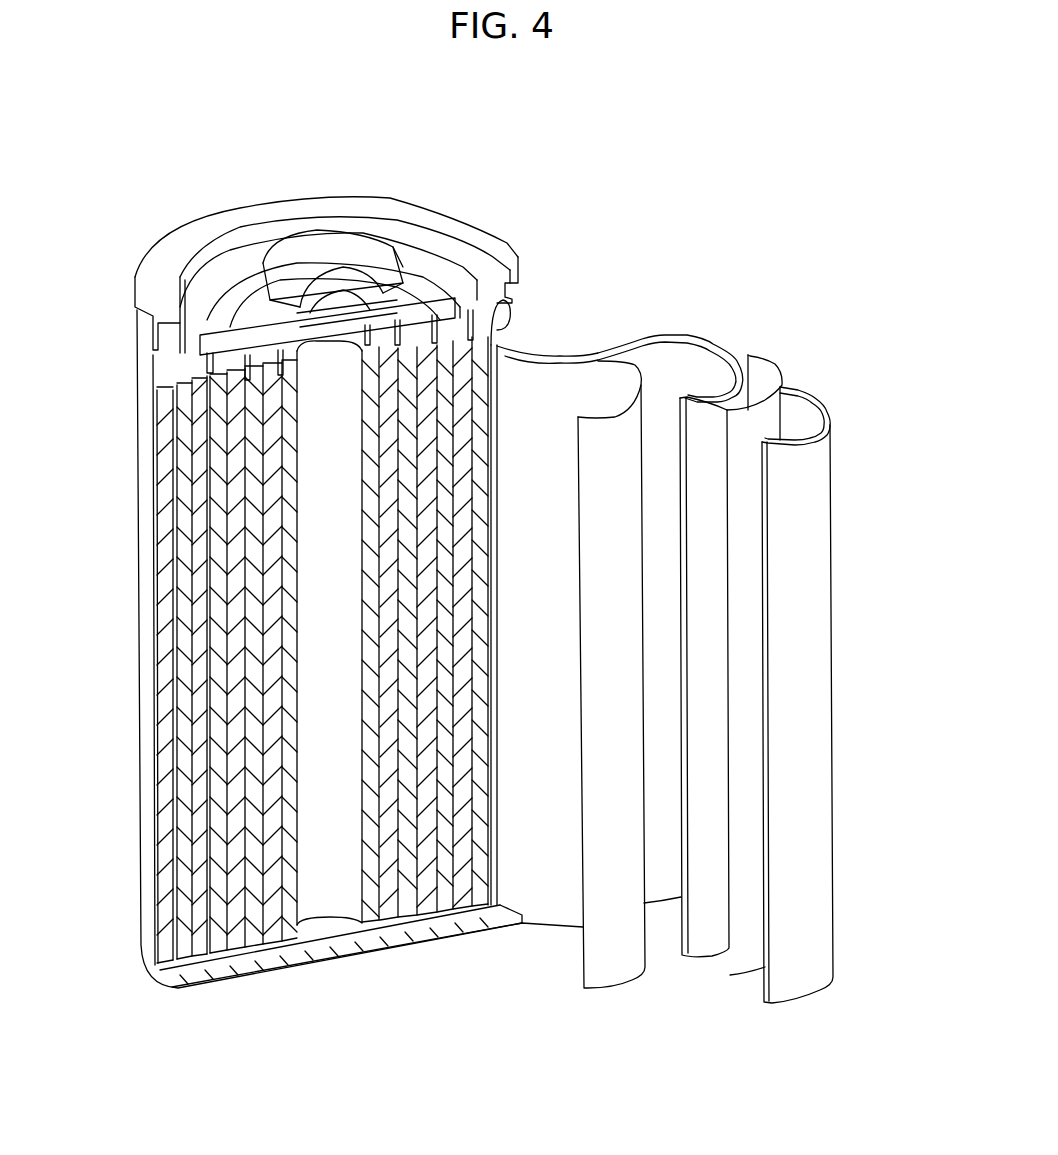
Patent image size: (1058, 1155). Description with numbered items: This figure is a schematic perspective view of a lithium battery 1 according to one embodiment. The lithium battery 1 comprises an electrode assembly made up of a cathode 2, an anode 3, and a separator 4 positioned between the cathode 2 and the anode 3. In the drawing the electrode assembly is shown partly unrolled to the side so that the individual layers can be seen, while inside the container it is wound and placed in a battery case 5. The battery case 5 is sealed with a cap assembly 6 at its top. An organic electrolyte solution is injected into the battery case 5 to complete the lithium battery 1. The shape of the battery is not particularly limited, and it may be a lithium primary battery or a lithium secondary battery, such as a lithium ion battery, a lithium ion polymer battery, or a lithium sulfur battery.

The lithium battery 1 is at (785, 310).
The cathode 2 is at (815, 528).
The anode 3 is at (703, 410).
The separator 4 is at (772, 414).
The battery case 5 is at (150, 900).
The cap assembly 6 is at (342, 240).